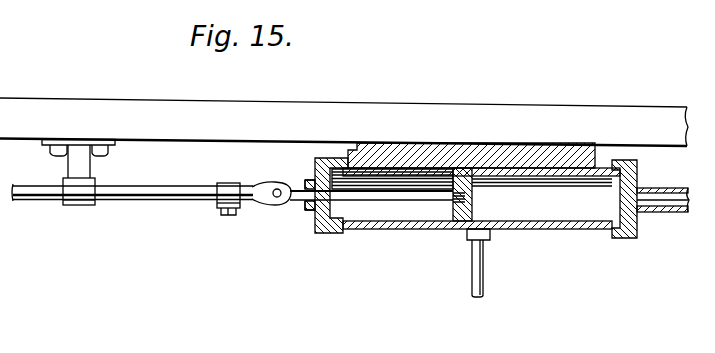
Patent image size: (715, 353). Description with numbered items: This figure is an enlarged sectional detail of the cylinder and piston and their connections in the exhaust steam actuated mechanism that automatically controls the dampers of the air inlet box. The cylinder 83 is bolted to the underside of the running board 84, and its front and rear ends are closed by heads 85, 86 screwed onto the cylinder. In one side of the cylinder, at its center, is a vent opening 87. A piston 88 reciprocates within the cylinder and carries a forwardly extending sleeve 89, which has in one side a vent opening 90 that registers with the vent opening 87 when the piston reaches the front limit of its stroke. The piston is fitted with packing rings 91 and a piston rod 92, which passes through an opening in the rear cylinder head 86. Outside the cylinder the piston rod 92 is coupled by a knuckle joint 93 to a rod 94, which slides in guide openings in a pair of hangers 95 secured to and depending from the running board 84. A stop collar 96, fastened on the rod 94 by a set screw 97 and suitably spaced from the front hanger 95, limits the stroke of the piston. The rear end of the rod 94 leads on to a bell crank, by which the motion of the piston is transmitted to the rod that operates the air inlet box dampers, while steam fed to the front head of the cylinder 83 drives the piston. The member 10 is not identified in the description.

The rod 10 is at (690, 202).
The cylinder 83 is at (406, 232).
The running board 84 is at (445, 104).
The front cylinder head 85 is at (630, 239).
The rear cylinder head 86 is at (323, 236).
The vent opening 87 is at (485, 242).
The piston 88 is at (458, 167).
The sleeve 89 is at (530, 145).
The vent opening 90 is at (481, 213).
The packing rings 91 is at (457, 231).
The piston rod 92 is at (372, 196).
The knuckle joint 93 is at (276, 208).
The rod 94 is at (170, 196).
The hangers 95 is at (79, 207).
The stop collar 96 is at (228, 182).
The set screw 97 is at (227, 216).